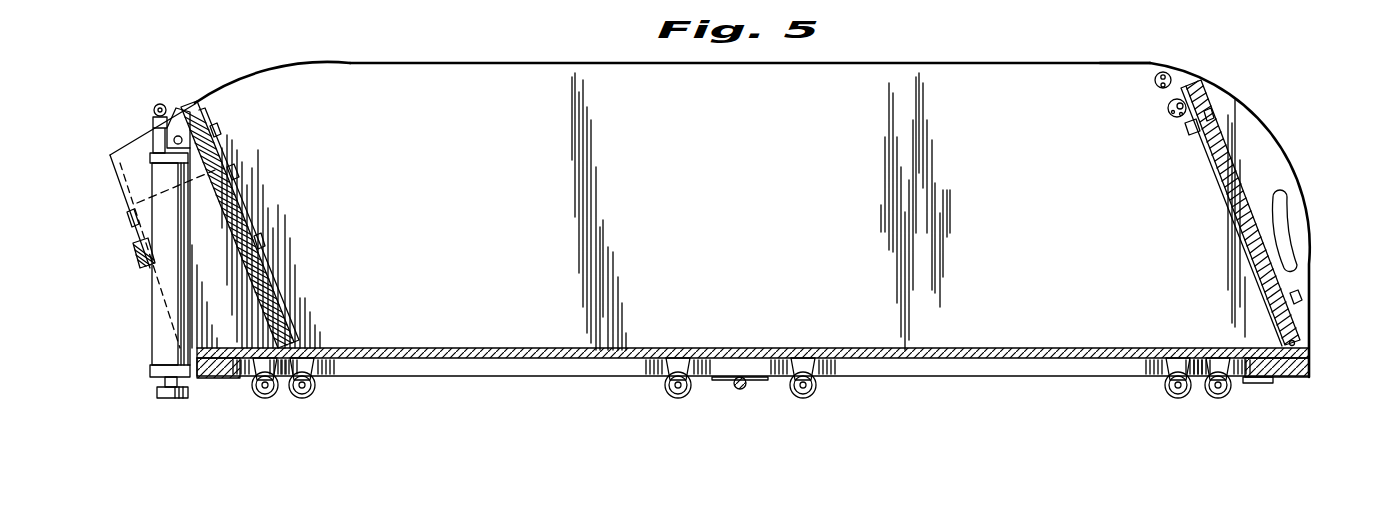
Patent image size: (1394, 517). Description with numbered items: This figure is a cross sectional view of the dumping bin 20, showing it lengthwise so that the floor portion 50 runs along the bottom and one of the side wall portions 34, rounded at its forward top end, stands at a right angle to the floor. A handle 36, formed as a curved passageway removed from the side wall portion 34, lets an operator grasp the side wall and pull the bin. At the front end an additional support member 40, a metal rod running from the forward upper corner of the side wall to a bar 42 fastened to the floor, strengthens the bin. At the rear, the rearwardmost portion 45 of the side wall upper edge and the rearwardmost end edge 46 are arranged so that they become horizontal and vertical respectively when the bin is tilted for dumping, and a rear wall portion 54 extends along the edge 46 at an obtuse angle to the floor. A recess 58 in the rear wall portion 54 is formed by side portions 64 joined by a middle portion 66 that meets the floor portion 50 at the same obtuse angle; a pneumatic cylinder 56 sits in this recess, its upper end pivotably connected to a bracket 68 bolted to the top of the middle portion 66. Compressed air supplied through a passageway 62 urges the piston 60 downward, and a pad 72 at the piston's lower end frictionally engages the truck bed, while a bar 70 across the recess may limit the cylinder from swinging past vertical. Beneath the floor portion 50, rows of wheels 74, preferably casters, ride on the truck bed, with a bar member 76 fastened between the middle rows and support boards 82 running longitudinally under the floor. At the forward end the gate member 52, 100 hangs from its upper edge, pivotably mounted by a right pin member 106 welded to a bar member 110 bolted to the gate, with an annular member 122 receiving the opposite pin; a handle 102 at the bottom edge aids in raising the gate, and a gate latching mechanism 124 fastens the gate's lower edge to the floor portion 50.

The dumping bin 20 is at (917, 60).
The side wall portion 34 is at (1131, 76).
The handle 36 is at (1287, 204).
The additional support member 40 is at (1263, 379).
The bar 42 is at (1283, 365).
The rearwardmost portion of the upper edge 45 is at (133, 140).
The rearwardmost end edge 46 is at (156, 310).
The floor portion 50 is at (503, 349).
The gate member 52 is at (1220, 147).
The rear wall portion 54 is at (117, 183).
The pneumatic cylinder 56 is at (162, 327).
The recess 58 is at (236, 257).
The piston 60 is at (163, 397).
The passageway 62 is at (150, 97).
The side portion of the recess 64 is at (233, 322).
The middle portion 66 is at (272, 292).
The bracket 68 is at (173, 115).
The bar 70 is at (137, 258).
The pad 72 is at (186, 411).
The wheels 74 is at (305, 408).
The bar member 76 is at (746, 389).
The support board 82 is at (918, 370).
The gate member 100 is at (1250, 178).
The handle 102 is at (1300, 298).
The right pin member 106 is at (1173, 114).
The bar member 110 is at (1197, 132).
The annular member 122 is at (1168, 106).
The gate latching mechanism 124 is at (1295, 343).